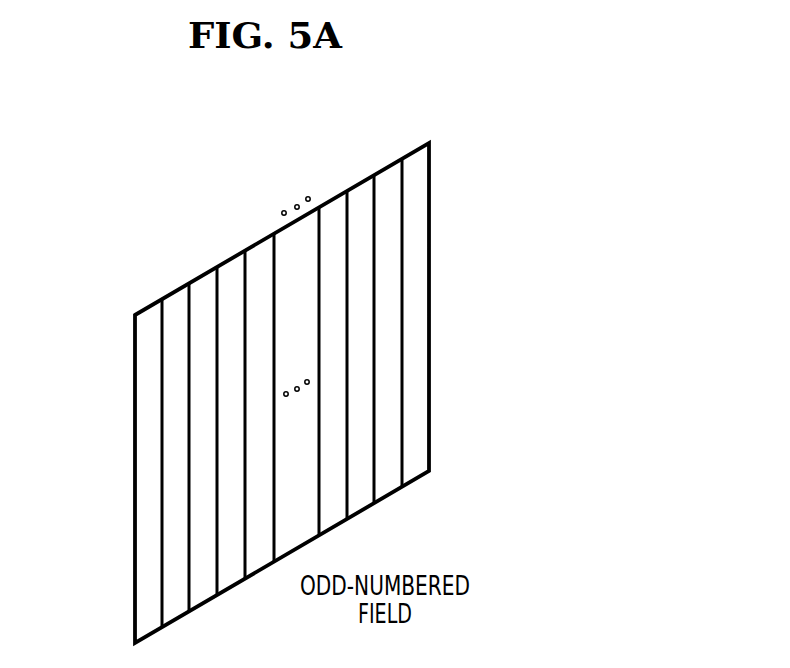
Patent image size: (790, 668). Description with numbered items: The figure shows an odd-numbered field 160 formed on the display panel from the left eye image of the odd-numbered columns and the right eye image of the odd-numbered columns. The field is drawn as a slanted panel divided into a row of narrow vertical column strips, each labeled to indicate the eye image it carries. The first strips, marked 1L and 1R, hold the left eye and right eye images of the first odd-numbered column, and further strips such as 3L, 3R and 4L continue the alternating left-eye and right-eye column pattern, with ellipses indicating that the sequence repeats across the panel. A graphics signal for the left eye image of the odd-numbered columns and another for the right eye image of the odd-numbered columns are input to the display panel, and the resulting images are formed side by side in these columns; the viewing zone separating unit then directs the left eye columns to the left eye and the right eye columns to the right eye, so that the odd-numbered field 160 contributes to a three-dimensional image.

The odd-numbered field 160 is at (110, 310).
The first left-eye pixel column 1L is at (147, 451).
The first right-eye pixel column 1R is at (173, 434).
The third left-eye pixel column 3L is at (202, 419).
The third right-eye pixel column 3R is at (231, 401).
The fourth left-eye pixel column 4L is at (261, 384).